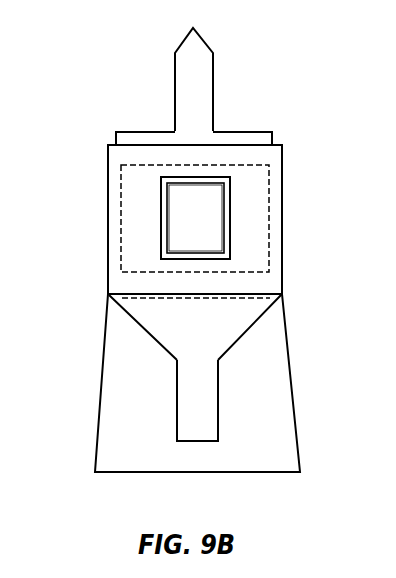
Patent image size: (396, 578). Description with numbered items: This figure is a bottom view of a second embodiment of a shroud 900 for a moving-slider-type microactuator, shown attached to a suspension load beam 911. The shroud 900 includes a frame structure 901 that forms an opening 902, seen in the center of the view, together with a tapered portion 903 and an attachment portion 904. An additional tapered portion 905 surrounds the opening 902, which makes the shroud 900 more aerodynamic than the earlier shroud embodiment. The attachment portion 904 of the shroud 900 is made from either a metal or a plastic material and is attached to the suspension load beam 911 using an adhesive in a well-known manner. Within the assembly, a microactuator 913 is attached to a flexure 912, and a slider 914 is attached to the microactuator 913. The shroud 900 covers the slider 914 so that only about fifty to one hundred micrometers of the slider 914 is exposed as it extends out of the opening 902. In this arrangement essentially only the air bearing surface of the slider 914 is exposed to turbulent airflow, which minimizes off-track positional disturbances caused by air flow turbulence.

The shroud 900 is at (260, 300).
The frame structure 901 is at (282, 172).
The opening 902 is at (230, 247).
The tapered portion 903 is at (202, 360).
The attachment portion 904 is at (207, 423).
The additional tapered portion 905 is at (272, 263).
The suspension load beam 911 is at (200, 82).
The flexure 912 is at (277, 466).
The microactuator 913 is at (243, 222).
The slider 914 is at (172, 222).